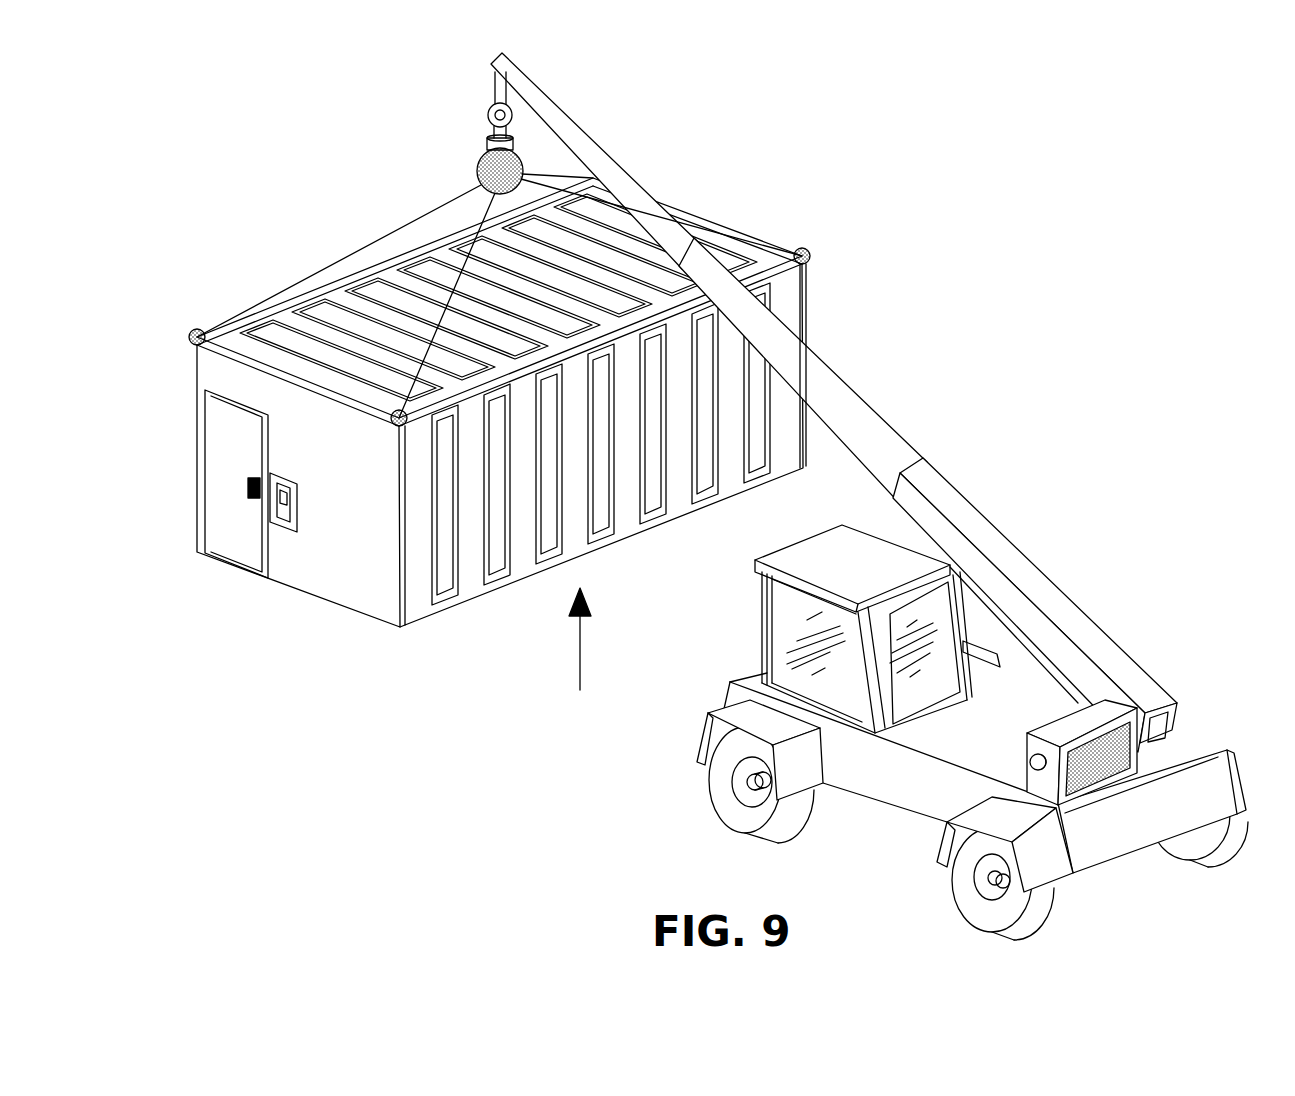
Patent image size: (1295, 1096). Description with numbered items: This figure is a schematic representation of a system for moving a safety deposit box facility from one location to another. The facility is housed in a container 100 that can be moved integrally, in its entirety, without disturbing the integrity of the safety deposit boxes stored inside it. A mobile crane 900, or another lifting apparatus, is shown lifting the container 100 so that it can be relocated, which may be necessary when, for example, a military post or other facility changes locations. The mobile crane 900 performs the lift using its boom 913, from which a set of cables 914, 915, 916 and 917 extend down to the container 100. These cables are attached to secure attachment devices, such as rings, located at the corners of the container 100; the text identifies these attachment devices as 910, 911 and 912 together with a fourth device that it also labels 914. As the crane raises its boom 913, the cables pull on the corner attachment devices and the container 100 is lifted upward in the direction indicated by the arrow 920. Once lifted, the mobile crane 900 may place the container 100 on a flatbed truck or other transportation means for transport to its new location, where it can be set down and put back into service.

The container 100 is at (320, 232).
The mobile crane 900 is at (1076, 532).
The secure attachment device 910 is at (189, 333).
The secure attachment device 911 is at (391, 423).
The secure attachment device 912 is at (808, 250).
The boom 913 is at (617, 155).
The cable 914 is at (547, 171).
The cable 915 is at (400, 222).
The cable 916 is at (705, 222).
The cable 917 is at (340, 288).
The arrow 920 is at (574, 648).